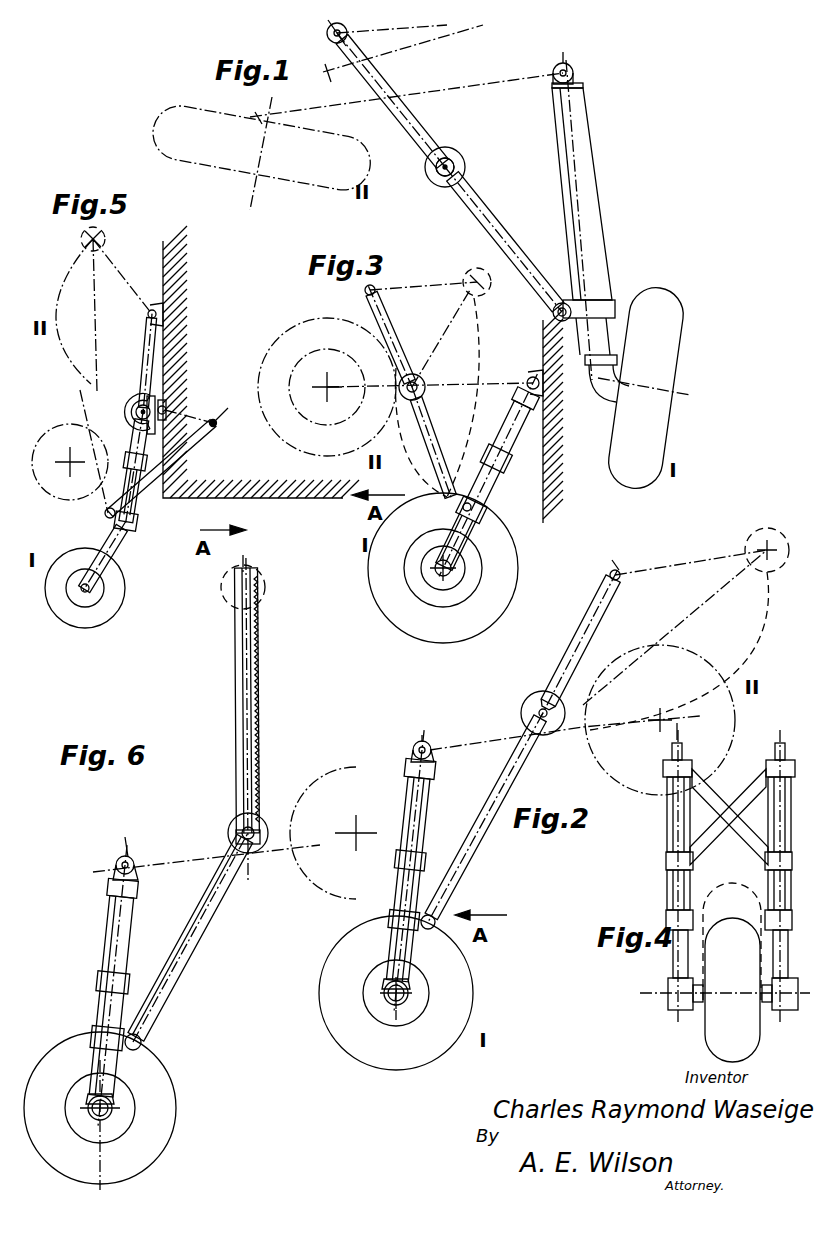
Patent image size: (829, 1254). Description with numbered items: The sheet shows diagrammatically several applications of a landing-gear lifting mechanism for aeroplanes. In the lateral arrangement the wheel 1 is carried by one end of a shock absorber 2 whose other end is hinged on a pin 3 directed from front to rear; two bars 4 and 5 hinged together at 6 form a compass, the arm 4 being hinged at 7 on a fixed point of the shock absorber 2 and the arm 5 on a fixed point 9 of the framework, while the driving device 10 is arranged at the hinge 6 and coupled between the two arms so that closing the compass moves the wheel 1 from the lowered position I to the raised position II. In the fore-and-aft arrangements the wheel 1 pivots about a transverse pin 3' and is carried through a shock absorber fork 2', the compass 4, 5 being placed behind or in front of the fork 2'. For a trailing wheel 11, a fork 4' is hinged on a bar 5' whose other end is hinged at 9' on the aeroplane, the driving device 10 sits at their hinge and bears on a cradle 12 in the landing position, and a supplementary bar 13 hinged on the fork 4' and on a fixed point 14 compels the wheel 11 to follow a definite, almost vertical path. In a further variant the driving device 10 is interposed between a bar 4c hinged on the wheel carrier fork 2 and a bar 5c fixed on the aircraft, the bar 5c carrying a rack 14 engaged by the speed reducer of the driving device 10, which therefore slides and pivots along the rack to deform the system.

In FIG. 1, the wheel 1 is at (652, 298).
In FIG. 3, the wheel 1 is at (443, 568).
In FIG. 6, the wheel 1 is at (100, 1108).
In FIG. 2, the wheel 1 is at (461, 978).
In FIG. 1, the shock absorber 2 is at (590, 231).
In FIG. 6, the shock absorber 2 is at (109, 985).
In FIG. 3, the shock absorber fork 2' is at (488, 475).
In FIG. 2, the shock absorber fork 2' is at (422, 871).
In FIG. 1, the pin 3 is at (583, 68).
In FIG. 6, the pin 3 is at (142, 857).
In FIG. 2, the pin 3' is at (441, 754).
In FIG. 1, the bar 4 is at (503, 239).
In FIG. 3, the bar 4 is at (436, 443).
In FIG. 2, the bar 4 is at (485, 819).
In FIG. 5, the fork 4' is at (118, 502).
In FIG. 6, the bar 4c is at (203, 919).
In FIG. 1, the bar 5 is at (391, 99).
In FIG. 3, the bar 5 is at (390, 337).
In FIG. 2, the bar 5 is at (583, 644).
In FIG. 5, the bar 5' is at (134, 363).
In FIG. 6, the bar 5c is at (246, 700).
In FIG. 1, the hinge 6 is at (454, 166).
In FIG. 1, the hinge 7 is at (570, 300).
In FIG. 1, the fixed point 9 is at (319, 31).
In FIG. 5, the fixed point 9' is at (140, 312).
In FIG. 1, the driving device 10 is at (436, 177).
In FIG. 3, the driving device 10 is at (418, 378).
In FIG. 5, the driving device 10 is at (124, 412).
In FIG. 6, the driving device 10 is at (233, 828).
In FIG. 2, the driving device 10 is at (543, 713).
In FIG. 5, the trailing wheel 11 is at (112, 582).
In FIG. 5, the cradle 12 is at (167, 409).
In FIG. 5, the supplementary bar 13 is at (152, 480).
In FIG. 5, the fixed point / rack 14 is at (216, 426).
In FIG. 6, the fixed point / rack 14 is at (222, 699).